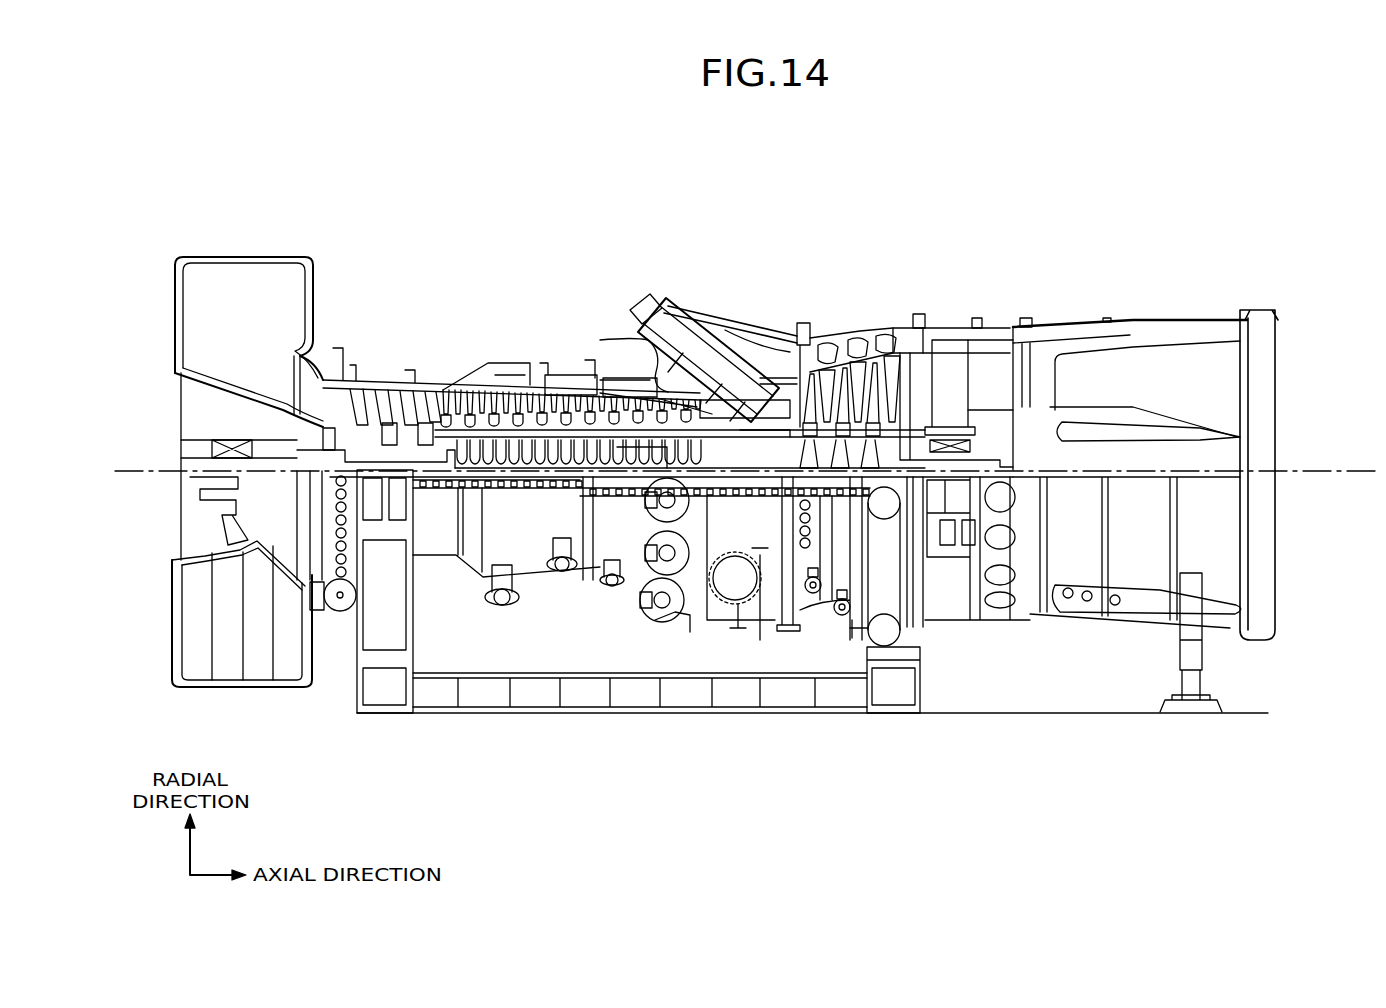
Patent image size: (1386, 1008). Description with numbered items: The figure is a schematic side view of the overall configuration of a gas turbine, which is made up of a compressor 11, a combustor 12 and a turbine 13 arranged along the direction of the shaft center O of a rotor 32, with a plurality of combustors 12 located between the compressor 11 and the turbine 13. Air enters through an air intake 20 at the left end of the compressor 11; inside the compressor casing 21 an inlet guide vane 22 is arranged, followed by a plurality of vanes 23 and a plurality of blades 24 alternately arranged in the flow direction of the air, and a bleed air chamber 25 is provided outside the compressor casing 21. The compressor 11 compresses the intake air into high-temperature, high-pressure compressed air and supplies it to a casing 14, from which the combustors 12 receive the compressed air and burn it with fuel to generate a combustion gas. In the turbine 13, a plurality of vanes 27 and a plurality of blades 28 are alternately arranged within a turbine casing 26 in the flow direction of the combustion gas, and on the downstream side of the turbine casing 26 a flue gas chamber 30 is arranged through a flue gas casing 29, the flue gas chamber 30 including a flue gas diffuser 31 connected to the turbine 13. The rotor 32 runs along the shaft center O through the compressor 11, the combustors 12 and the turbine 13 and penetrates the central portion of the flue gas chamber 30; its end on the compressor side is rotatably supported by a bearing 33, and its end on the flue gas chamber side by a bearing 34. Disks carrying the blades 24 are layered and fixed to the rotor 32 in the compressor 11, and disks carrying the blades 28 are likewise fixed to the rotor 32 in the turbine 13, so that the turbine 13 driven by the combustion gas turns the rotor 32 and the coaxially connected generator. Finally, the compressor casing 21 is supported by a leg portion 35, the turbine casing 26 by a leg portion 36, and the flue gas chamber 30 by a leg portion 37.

The compressor 11 is at (388, 338).
The combustor 12 is at (672, 295).
The turbine 13 is at (923, 308).
The casing 14 is at (745, 343).
The air intake 20 is at (188, 316).
The compressor casing 21 is at (362, 398).
The inlet guide vane 22 is at (345, 395).
The vane 23 is at (400, 393).
The blade 24 is at (370, 400).
The bleed air chamber 25 is at (512, 375).
The turbine casing 26 is at (858, 345).
The vane 27 is at (783, 390).
The blade 28 is at (810, 393).
The flue gas casing 29 is at (950, 313).
The flue gas chamber 30 is at (1200, 322).
The flue gas diffuser 31 is at (995, 342).
The rotor 32 is at (700, 420).
The bearing 33 is at (212, 447).
The bearing 34 is at (1275, 440).
The leg portion 35 is at (360, 638).
The leg portion 36 is at (905, 632).
The leg portion 37 is at (1203, 660).
The shaft center O is at (1333, 478).